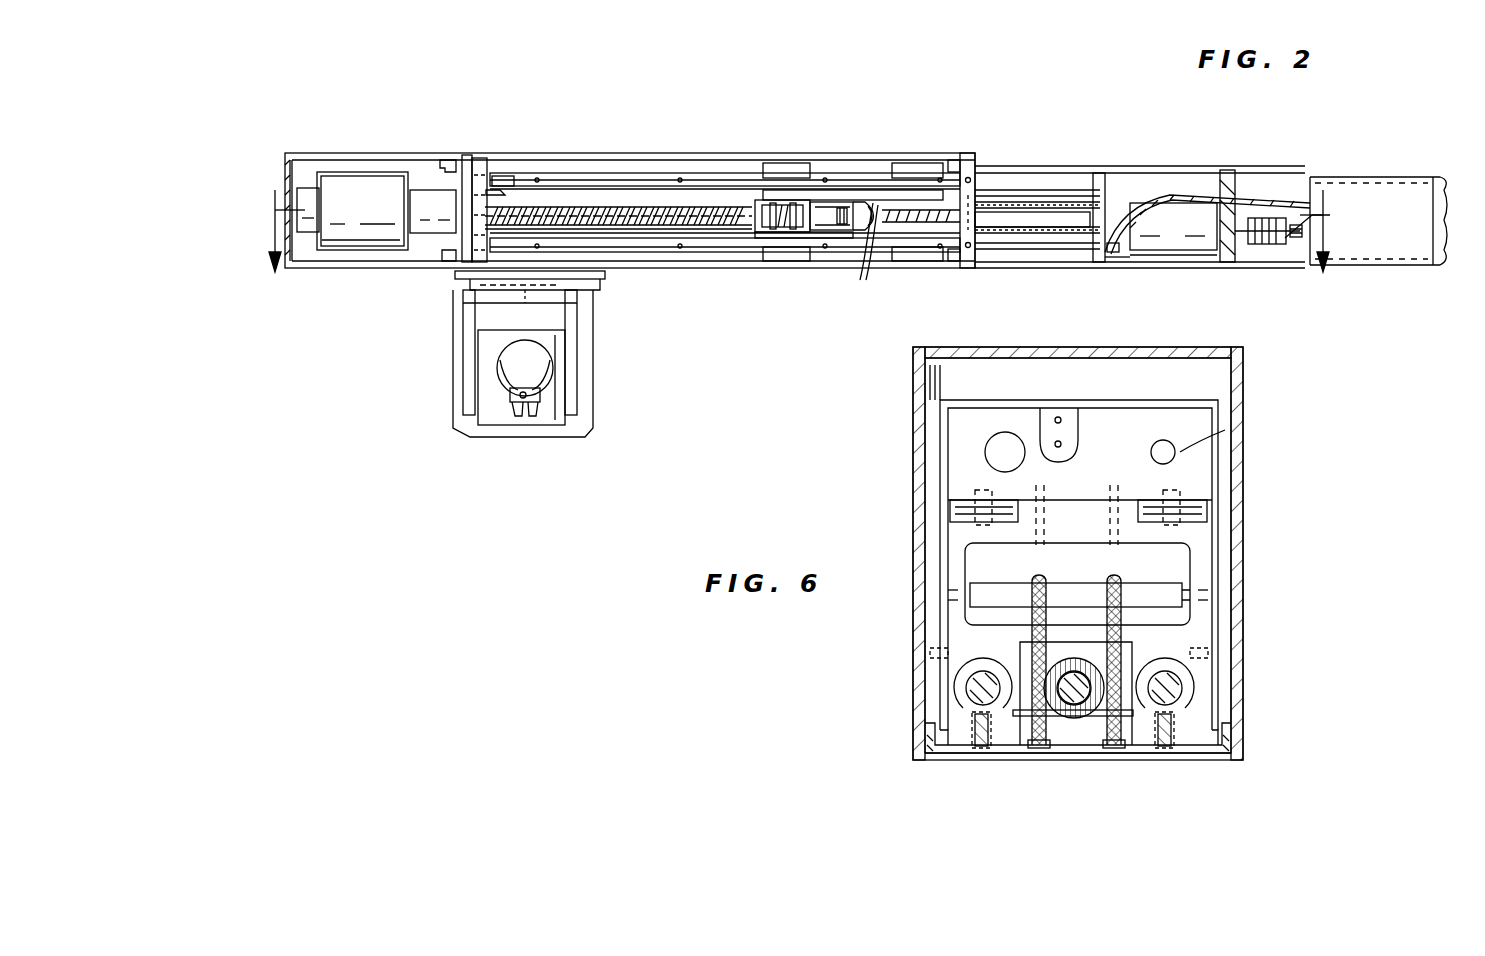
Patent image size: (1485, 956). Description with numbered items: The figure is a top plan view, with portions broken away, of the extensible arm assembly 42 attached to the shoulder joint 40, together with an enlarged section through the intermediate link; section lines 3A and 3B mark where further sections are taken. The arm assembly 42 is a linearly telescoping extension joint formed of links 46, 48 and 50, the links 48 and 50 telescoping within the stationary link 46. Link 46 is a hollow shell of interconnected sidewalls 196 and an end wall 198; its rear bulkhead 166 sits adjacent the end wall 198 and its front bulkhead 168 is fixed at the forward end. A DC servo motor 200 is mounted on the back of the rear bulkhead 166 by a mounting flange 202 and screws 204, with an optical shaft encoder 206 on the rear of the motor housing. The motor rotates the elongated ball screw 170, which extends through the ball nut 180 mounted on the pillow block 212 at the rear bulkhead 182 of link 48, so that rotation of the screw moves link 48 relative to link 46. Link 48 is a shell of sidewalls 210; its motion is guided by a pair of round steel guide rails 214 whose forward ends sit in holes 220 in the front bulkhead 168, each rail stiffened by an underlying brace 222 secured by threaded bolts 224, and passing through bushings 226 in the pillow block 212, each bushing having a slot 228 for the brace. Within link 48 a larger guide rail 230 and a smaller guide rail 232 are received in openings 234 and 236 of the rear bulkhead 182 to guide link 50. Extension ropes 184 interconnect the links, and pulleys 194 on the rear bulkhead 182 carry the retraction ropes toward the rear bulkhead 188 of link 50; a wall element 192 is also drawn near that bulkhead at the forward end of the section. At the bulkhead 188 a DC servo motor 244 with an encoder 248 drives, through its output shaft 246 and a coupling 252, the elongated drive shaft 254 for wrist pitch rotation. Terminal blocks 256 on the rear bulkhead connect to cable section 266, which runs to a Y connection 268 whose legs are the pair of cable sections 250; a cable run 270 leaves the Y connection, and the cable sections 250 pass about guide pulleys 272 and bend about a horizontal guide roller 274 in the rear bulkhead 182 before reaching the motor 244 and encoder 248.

In FIG. 2, the shoulder joint 40 is at (596, 362).
In FIG. 2, the extensible arm assembly 42 is at (770, 200).
In FIG. 2, the link 46 is at (835, 202).
In FIG. 2, the link 48 is at (1040, 166).
In FIG. 2, the link 50 is at (1345, 177).
In FIG. 2, the rear bulkhead 166 is at (464, 155).
In FIG. 2, the front bulkhead 168 is at (955, 158).
In FIG. 2, the ball screw 170 is at (630, 207).
In FIG. 6, the ball screw 170 is at (1080, 706).
In FIG. 6, the ball nut 180 is at (1075, 720).
In FIG. 2, the rear bulkhead 182 is at (770, 268).
In FIG. 6, the extension ropes 184 is at (955, 512).
In FIG. 2, the rear bulkhead 188 is at (1100, 173).
In FIG. 2, the end wall 192 is at (1240, 170).
In FIG. 6, the pulleys 194 is at (960, 500).
In FIG. 2, the sidewalls 196 is at (550, 160).
In FIG. 6, the sidewalls 196 is at (1220, 358).
In FIG. 2, the end wall 198 is at (280, 160).
In FIG. 2, the DC servo motor 200 is at (345, 175).
In FIG. 2, the mounting flange 202 is at (448, 160).
In FIG. 2, the screws 204 is at (425, 190).
In FIG. 2, the optical shaft encoder 206 is at (310, 188).
In FIG. 2, the sidewalls 210 is at (998, 190).
In FIG. 6, the sidewalls 210 is at (1205, 420).
In FIG. 2, the pillow block 212 is at (840, 268).
In FIG. 6, the pillow block 212 is at (1195, 680).
In FIG. 2, the guide rails 214 is at (598, 173).
In FIG. 6, the guide rails 214 is at (975, 688).
In FIG. 2, the hole 220 is at (962, 163).
In FIG. 6, the stiffening brace 222 is at (972, 728).
In FIG. 6, the threaded bolts 224 is at (970, 755).
In FIG. 2, the bushings 226 is at (790, 163).
In FIG. 6, the bushings 226 is at (965, 672).
In FIG. 6, the slot 228 is at (1150, 714).
In FIG. 6, the guide rail 230 is at (1010, 452).
In FIG. 6, the guide rail 232 is at (1228, 452).
In FIG. 6, the opening 234 is at (985, 452).
In FIG. 6, the opening 236 is at (1163, 452).
In FIG. 2, the DC servo motor 244 is at (1172, 252).
In FIG. 2, the output shaft 246 is at (1250, 200).
In FIG. 2, the encoder 248 is at (1125, 257).
In FIG. 2, the cable sections 250 is at (755, 210).
In FIG. 6, the cable sections 250 is at (1112, 595).
In FIG. 2, the coupling 252 is at (1268, 244).
In FIG. 2, the drive shaft 254 is at (1325, 215).
In FIG. 2, the terminal blocks 256 is at (478, 158).
In FIG. 2, the cable section 266 is at (503, 176).
In FIG. 2, the Y connection 268 is at (862, 202).
In FIG. 2, the cable 270 is at (868, 272).
In FIG. 6, the guide pulleys 272 is at (1035, 748).
In FIG. 6, the guide roller 274 is at (1018, 595).
In FIG. 2, the section line 3A is at (805, 245).
In FIG. 2, the section line 3B is at (805, 310).